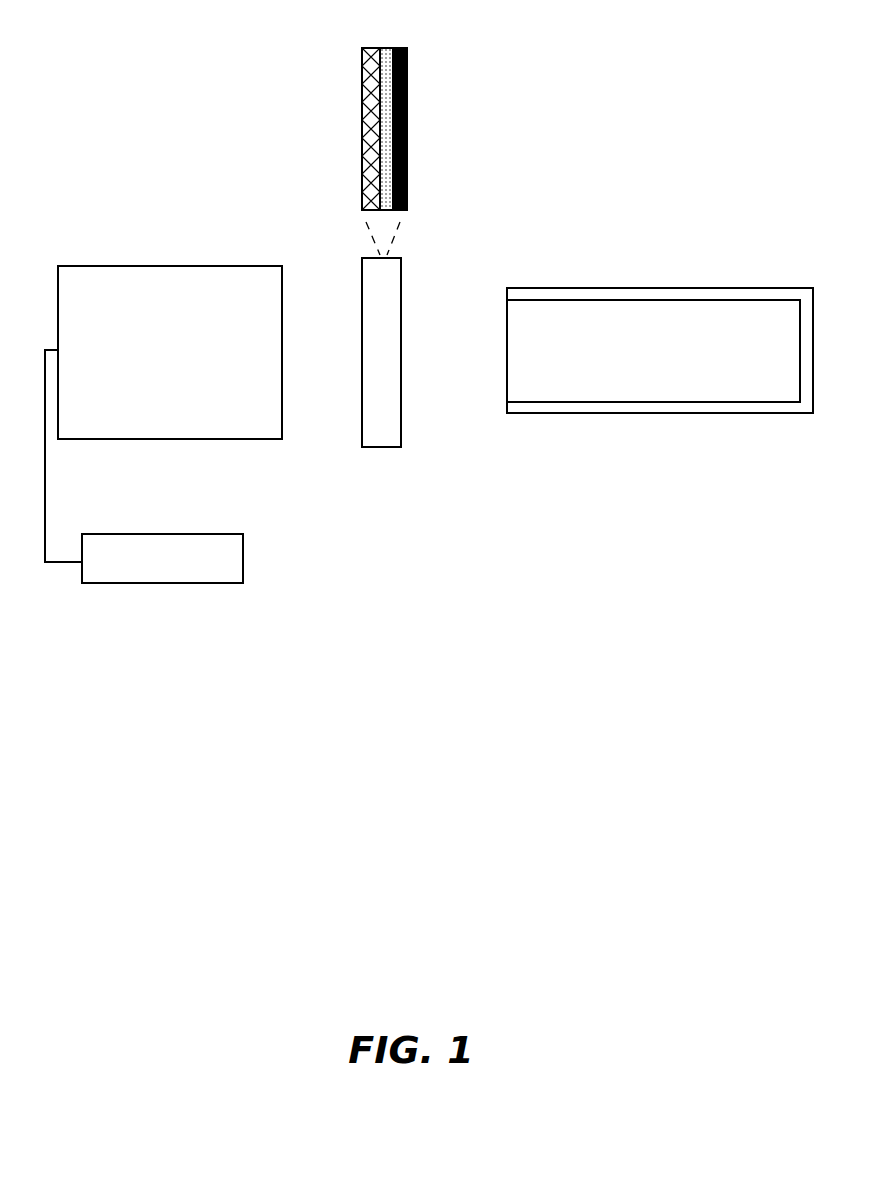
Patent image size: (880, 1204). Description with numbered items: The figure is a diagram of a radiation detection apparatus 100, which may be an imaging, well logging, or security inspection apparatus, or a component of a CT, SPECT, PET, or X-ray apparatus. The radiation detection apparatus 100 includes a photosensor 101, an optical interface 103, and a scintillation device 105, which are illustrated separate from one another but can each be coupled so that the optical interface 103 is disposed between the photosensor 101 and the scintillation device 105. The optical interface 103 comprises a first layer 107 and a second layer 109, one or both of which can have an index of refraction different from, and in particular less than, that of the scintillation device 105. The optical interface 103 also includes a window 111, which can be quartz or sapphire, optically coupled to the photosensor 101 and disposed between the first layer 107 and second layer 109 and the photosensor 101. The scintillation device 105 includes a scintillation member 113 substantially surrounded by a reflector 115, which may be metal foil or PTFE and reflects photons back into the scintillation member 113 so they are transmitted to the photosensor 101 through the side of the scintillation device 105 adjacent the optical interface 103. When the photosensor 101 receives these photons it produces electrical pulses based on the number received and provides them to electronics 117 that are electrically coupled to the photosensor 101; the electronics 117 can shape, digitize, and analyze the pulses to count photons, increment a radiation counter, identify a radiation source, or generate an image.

The radiation detection apparatus 100 is at (136, 179).
The photosensor 101 is at (153, 368).
The optical interface 103 is at (382, 447).
The scintillation device 105 is at (688, 424).
The first layer 107 is at (400, 48).
The second layer 109 is at (383, 48).
The window 111 is at (362, 128).
The scintillation member 113 is at (633, 368).
The reflector 115 is at (718, 295).
The electronics 117 is at (163, 533).